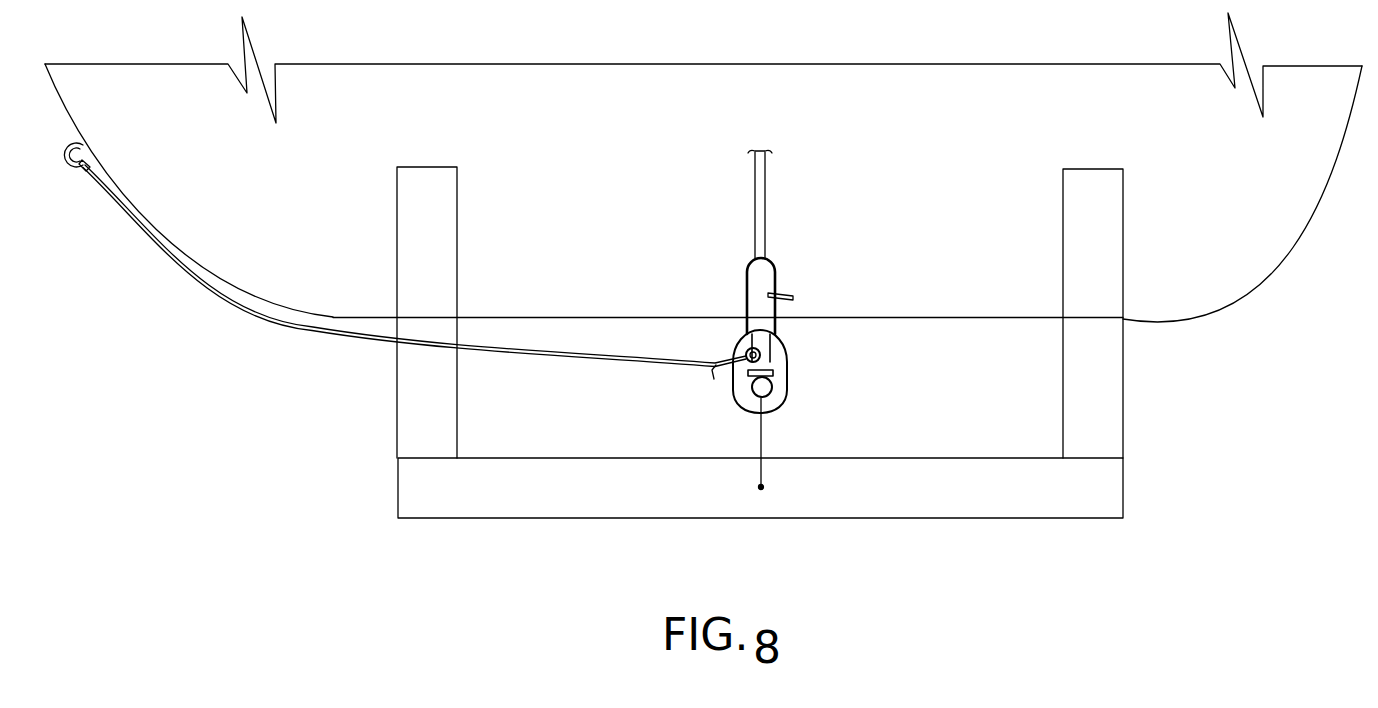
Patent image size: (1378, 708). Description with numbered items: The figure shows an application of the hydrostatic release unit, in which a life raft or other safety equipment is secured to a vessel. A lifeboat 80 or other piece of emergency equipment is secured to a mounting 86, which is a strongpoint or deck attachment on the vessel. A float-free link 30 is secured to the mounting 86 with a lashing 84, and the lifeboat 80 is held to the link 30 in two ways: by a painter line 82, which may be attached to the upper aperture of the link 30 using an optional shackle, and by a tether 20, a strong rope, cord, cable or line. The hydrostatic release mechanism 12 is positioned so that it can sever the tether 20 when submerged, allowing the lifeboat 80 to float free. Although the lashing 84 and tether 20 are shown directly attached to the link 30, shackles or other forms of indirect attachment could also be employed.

The hydrostatic release mechanism 12 is at (793, 298).
The tether 20 is at (745, 281).
The float-free link 30 is at (787, 378).
The lifeboat 80 is at (1222, 270).
The painter line 82 is at (327, 328).
The lashing 84 is at (758, 433).
The mounting 86 is at (567, 497).